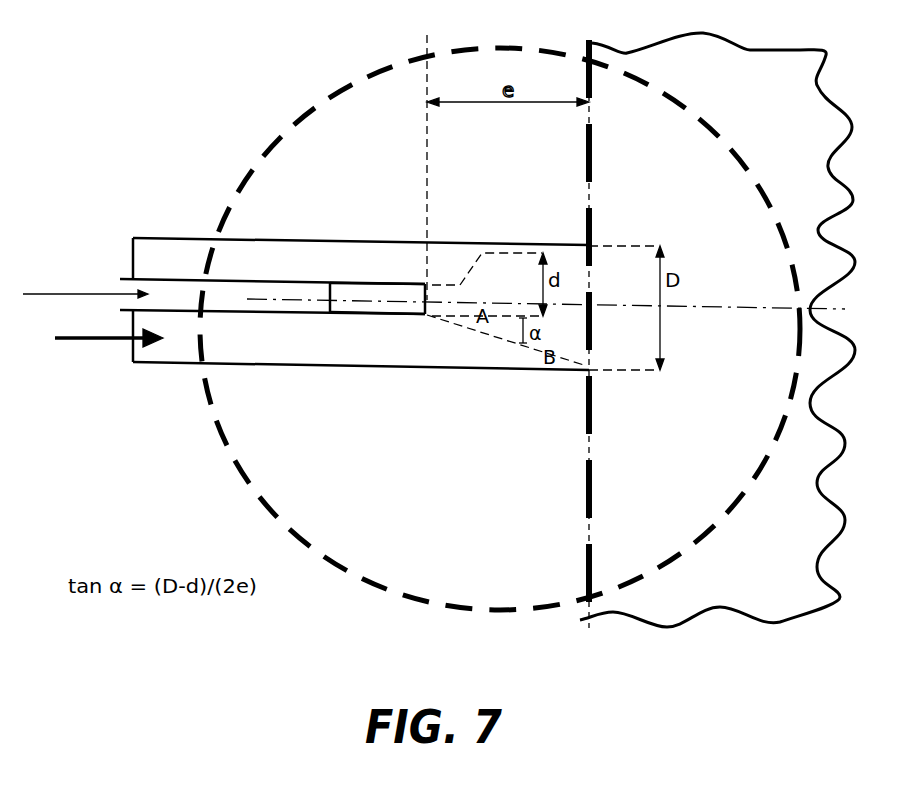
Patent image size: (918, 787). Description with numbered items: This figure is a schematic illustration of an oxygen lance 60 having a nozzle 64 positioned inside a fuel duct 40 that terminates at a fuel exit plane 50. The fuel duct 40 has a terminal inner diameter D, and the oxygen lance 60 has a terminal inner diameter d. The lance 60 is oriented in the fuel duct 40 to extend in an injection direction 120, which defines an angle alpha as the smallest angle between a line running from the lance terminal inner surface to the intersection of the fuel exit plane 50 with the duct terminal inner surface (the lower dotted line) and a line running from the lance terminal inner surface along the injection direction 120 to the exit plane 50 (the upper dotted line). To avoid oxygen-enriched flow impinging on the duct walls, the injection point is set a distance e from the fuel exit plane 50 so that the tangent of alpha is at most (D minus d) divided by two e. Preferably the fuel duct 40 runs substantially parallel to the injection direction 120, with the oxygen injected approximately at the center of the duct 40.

The fuel duct 40 is at (100, 342).
The fuel exit plane 50 is at (580, 620).
The oxygen lance 60 is at (185, 292).
The nozzle 64 is at (367, 290).
The injection direction 120 is at (69, 293).